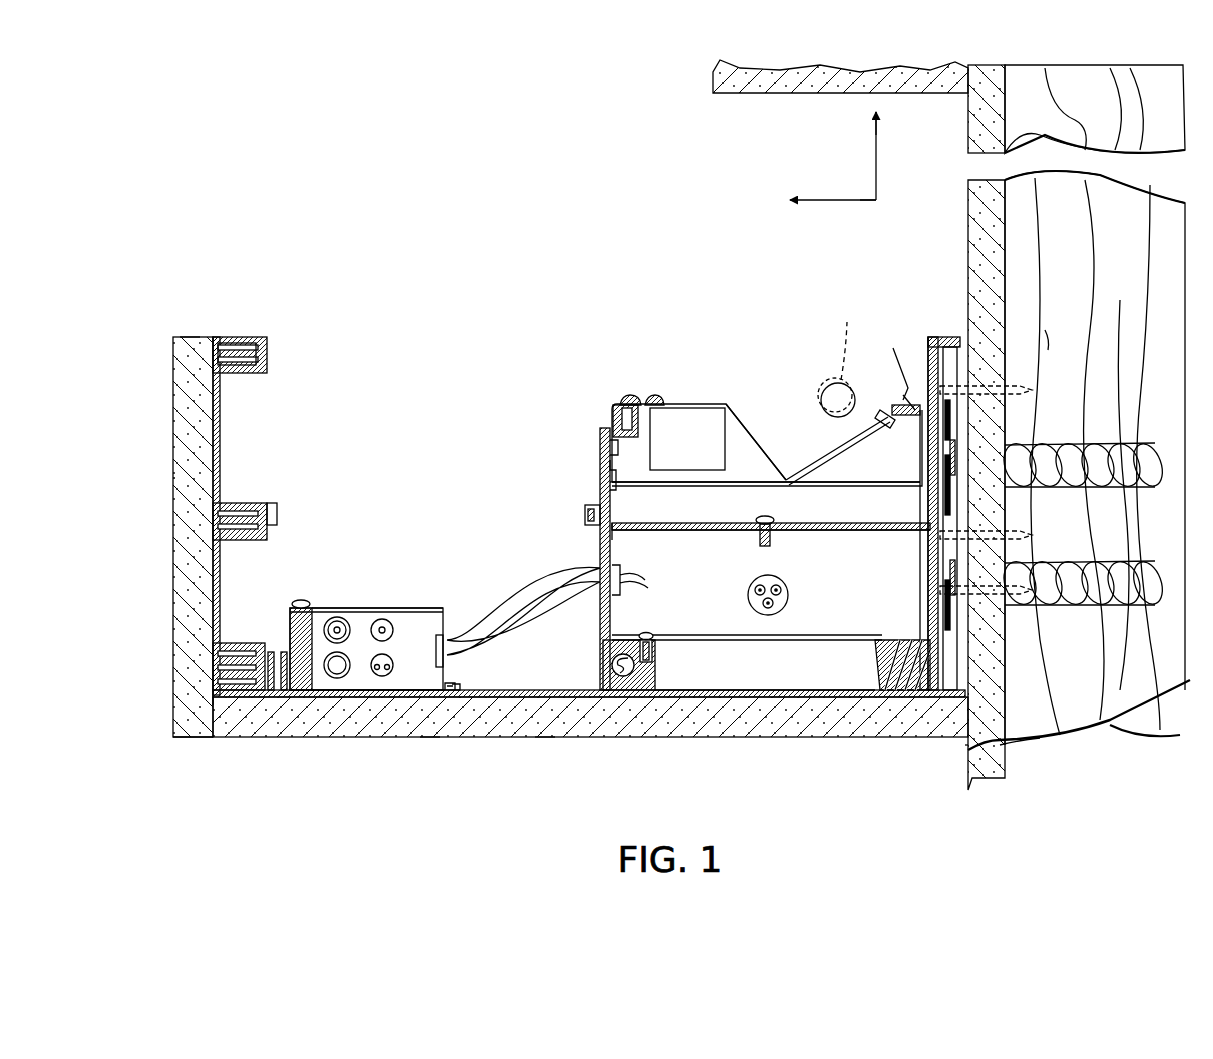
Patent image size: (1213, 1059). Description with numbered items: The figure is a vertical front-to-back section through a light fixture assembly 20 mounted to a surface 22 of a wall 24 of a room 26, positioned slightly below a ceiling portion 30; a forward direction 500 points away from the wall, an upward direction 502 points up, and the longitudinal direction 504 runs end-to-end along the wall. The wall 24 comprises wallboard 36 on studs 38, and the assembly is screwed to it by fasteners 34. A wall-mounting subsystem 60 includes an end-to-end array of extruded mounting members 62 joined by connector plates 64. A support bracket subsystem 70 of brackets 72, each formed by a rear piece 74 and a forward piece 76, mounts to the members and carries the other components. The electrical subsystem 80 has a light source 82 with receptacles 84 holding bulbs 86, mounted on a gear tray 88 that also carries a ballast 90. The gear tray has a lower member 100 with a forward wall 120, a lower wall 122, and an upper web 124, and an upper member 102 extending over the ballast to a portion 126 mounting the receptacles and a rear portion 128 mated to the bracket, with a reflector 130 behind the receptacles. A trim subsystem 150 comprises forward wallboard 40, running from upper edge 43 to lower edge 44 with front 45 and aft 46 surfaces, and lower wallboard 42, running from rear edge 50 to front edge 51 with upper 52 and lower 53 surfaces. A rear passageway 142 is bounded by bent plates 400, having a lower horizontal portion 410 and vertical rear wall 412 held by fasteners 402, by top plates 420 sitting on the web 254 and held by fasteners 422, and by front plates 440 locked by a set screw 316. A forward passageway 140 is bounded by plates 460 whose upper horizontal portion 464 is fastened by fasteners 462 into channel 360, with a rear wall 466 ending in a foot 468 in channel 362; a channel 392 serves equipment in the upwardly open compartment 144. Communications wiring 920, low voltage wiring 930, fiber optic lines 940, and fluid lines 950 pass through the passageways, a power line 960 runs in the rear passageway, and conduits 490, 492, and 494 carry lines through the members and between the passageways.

The light fixture assembly 20 is at (370, 760).
The surface 22 is at (965, 745).
The wall 24 is at (960, 778).
The room 26 is at (164, 842).
The ceiling portion 30 is at (752, 118).
The fasteners 34 is at (1005, 390).
The wallboard 36 is at (1000, 745).
The studs 38 is at (1110, 705).
The forward trim wallboard 40 is at (175, 420).
The lower trim wallboard 42 is at (292, 737).
The upper edge 43 is at (186, 337).
The lower edge 44 is at (183, 737).
The front surface 45 is at (175, 478).
The aft surface 46 is at (220, 432).
The rear edge 50 is at (968, 710).
The front edge 51 is at (205, 705).
The upper surface 52 is at (563, 693).
The lower surface 53 is at (545, 737).
The wall-mounting subsystem 60 is at (958, 355).
The mounting members 62 is at (957, 455).
The connector plates 64 is at (1045, 330).
The support bracket subsystem 70 is at (405, 275).
The brackets 72 is at (272, 328).
The rear piece 74 is at (540, 430).
The forward piece 76 is at (232, 330).
The electrical subsystem 80 is at (825, 290).
The light source 82 is at (822, 385).
The receptacles 84 is at (830, 413).
The bulbs 86 is at (850, 322).
The gear tray 88 is at (705, 400).
The ballast 90 is at (680, 450).
The lower member 100 is at (603, 447).
The upper member 102 is at (747, 425).
The forward wall 120 is at (605, 468).
The lower wall 122 is at (660, 482).
The upper web 124 is at (633, 393).
The receptacle-mounting portion 126 is at (820, 445).
The rear portion 128 is at (915, 400).
The reflector 130 is at (893, 345).
The passageway 140 is at (317, 603).
The passageway 142 is at (877, 573).
The compartment 144 is at (377, 380).
The trim subsystem 150 is at (430, 737).
The web 254 is at (820, 530).
The set screw 316 is at (583, 512).
The channel 360 is at (290, 622).
The channel 362 is at (455, 686).
The channel 392 is at (272, 503).
The bent sheetmetal plates 400 is at (728, 650).
The fasteners 402 is at (655, 630).
The lower horizontal portion 410 is at (788, 640).
The vertical rear wall 412 is at (928, 600).
The sheetmetal plates 420 is at (672, 528).
The fasteners 422 is at (772, 517).
The sheetmetal plates 440 is at (597, 543).
The bent sheetmetal plates 460 is at (368, 603).
The fasteners 462 is at (298, 600).
The upper horizontal portion 464 is at (352, 606).
The rear wall 466 is at (440, 637).
The rear foot 468 is at (456, 692).
The conduits 490 is at (1085, 452).
The conduits 492 is at (1110, 590).
The conduits 494 is at (515, 618).
The forward direction 500 is at (840, 200).
The upward direction 502 is at (876, 135).
The longitudinal direction 504 is at (876, 200).
The communications wiring 920 is at (332, 650).
The low voltage power supply wiring 930 is at (382, 678).
The fiber optic lines 940 is at (389, 620).
The fluid lines 950 is at (337, 678).
The power line 960 is at (790, 610).